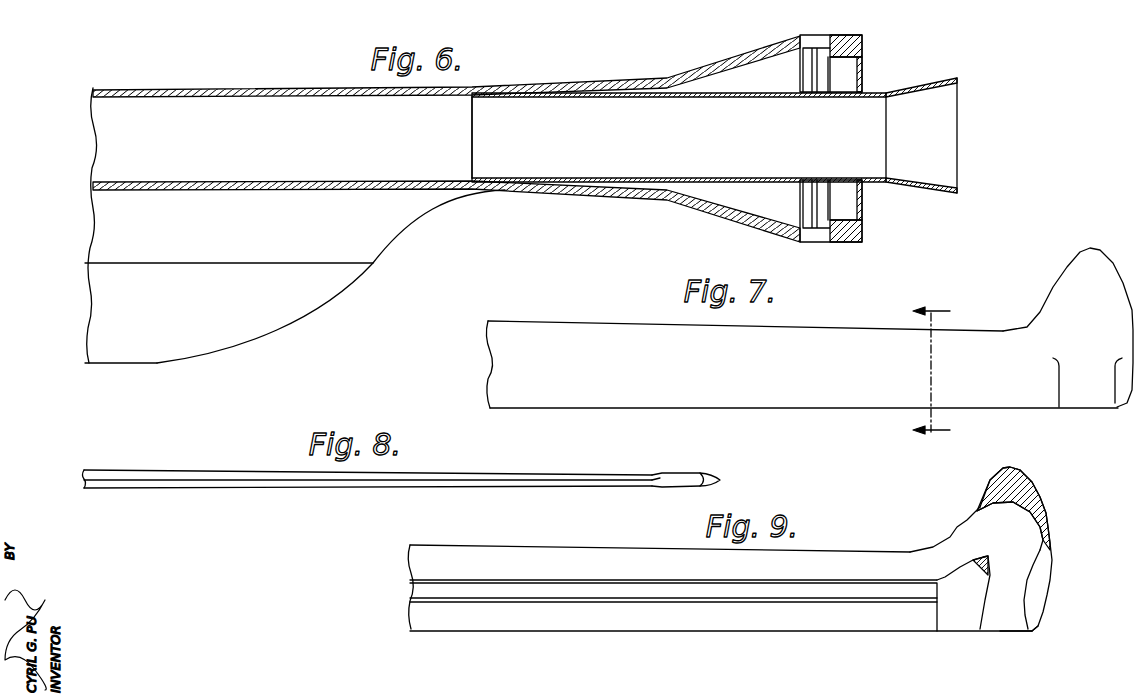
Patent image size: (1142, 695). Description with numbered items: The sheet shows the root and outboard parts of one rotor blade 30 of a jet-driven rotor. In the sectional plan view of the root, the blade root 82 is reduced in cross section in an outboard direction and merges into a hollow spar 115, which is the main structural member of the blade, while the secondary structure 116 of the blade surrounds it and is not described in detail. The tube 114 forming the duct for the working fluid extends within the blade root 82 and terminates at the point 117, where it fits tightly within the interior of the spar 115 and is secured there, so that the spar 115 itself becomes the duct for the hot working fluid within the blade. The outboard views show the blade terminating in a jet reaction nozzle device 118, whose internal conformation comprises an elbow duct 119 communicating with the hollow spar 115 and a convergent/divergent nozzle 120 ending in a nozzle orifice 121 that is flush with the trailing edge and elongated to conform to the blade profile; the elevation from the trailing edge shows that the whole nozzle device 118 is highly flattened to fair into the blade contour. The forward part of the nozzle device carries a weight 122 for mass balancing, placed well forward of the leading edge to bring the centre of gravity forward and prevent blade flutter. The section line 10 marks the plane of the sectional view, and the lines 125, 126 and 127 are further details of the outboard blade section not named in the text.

In FIG. 7, the section line 10 is at (931, 369).
In FIG. 6, the rotor blade 30 is at (329, 312).
In FIG. 7, the rotor blade 30 is at (848, 345).
In FIG. 8, the rotor blade 30 is at (500, 474).
In FIG. 9, the rotor blade 30 is at (687, 632).
In FIG. 6, the blade root 82 is at (733, 58).
In FIG. 6, the tube 114 is at (743, 97).
In FIG. 6, the hollow spar 115 is at (255, 90).
In FIG. 6, the secondary structure 116 is at (177, 327).
In FIG. 6, the tube termination 117 is at (470, 148).
In FIG. 7, the jet reaction nozzle device 118 is at (1133, 323).
In FIG. 9, the jet reaction nozzle device 118 is at (1053, 539).
In FIG. 9, the elbow duct 119 is at (980, 533).
In FIG. 9, the convergent/divergent nozzle 120 is at (1018, 577).
In FIG. 8, the nozzle orifice 121 is at (682, 478).
In FIG. 9, the nozzle orifice 121 is at (1010, 630).
In FIG. 9, the weight 122 is at (1030, 482).
In FIG. 9, the neck 125 is at (872, 567).
In FIG. 9, the groove 126 is at (860, 590).
In FIG. 9, the rib 127 is at (778, 615).